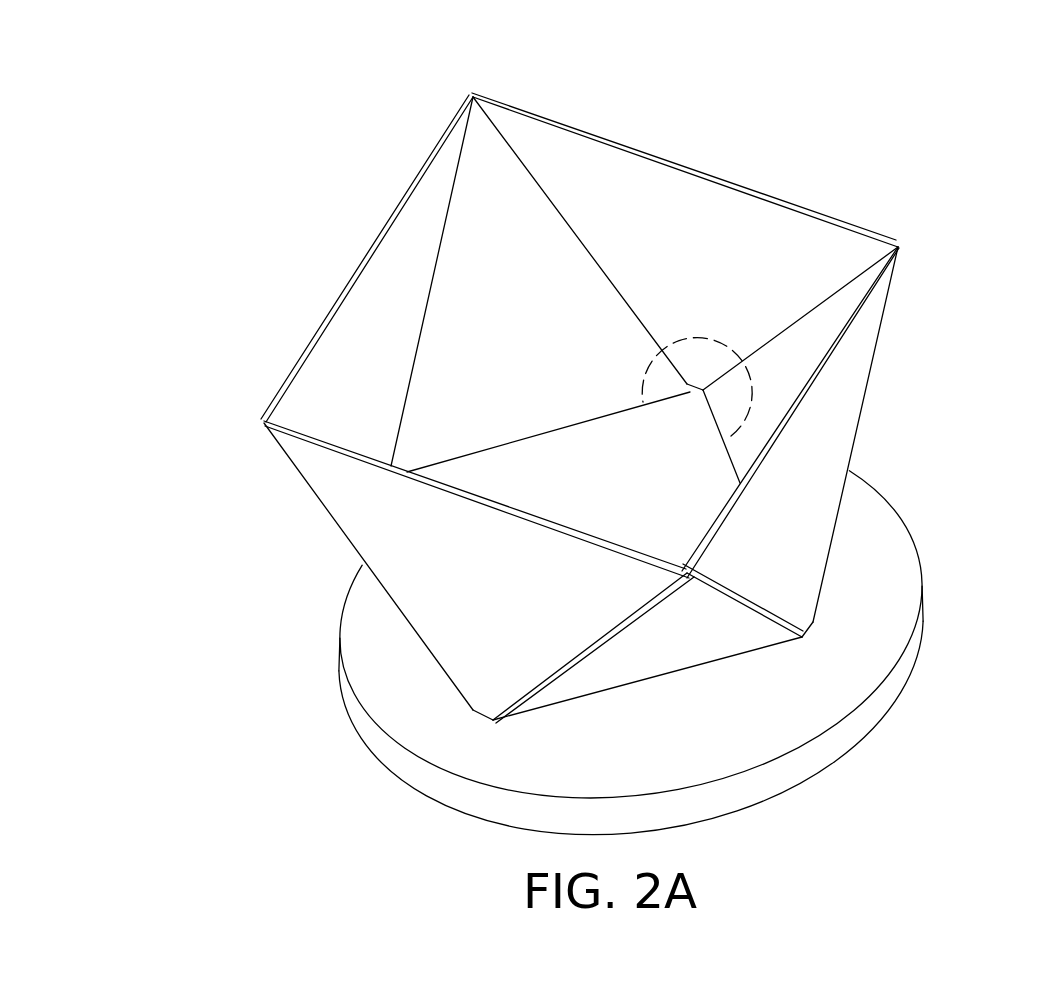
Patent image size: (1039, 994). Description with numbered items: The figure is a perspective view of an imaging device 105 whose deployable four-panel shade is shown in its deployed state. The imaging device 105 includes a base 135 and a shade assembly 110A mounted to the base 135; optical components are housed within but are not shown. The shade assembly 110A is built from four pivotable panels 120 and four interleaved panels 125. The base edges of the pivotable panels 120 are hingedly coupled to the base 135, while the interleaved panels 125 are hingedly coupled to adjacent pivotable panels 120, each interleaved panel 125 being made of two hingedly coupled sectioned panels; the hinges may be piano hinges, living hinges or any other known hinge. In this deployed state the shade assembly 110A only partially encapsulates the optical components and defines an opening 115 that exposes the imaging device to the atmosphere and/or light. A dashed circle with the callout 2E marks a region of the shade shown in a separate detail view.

The imaging device 105 is at (232, 158).
The shade assembly in deployed state 110A is at (626, 122).
The opening 115 is at (713, 178).
The pivotable panel 120 is at (524, 113).
The interleaved panel 125 is at (825, 213).
The base 135 is at (907, 669).
The detail view callout 2E is at (712, 446).